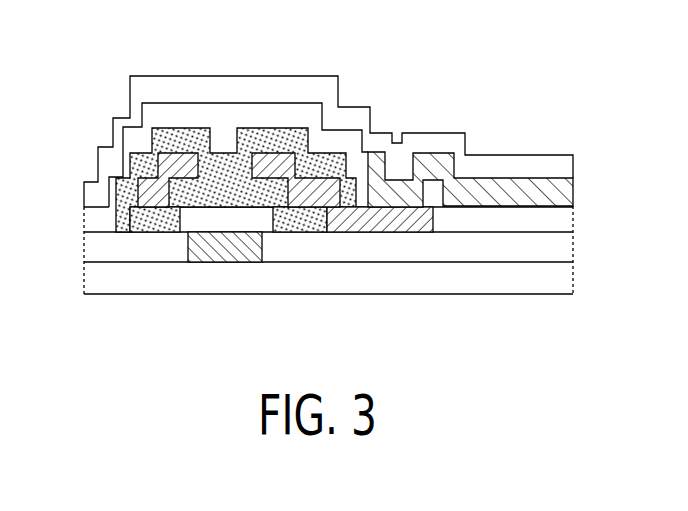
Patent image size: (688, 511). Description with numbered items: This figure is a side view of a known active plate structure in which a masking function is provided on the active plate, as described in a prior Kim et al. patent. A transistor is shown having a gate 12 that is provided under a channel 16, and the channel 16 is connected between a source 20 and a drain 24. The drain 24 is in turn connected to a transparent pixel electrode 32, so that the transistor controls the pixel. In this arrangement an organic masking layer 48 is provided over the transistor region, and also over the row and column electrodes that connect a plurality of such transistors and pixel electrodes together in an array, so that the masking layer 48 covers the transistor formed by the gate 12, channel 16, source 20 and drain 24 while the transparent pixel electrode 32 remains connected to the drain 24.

The gate 12 is at (228, 253).
The channel 16 is at (301, 229).
The source 20 is at (175, 152).
The drain 24 is at (385, 230).
The transparent pixel electrode 32 is at (523, 188).
The organic masking layer 48 is at (277, 130).